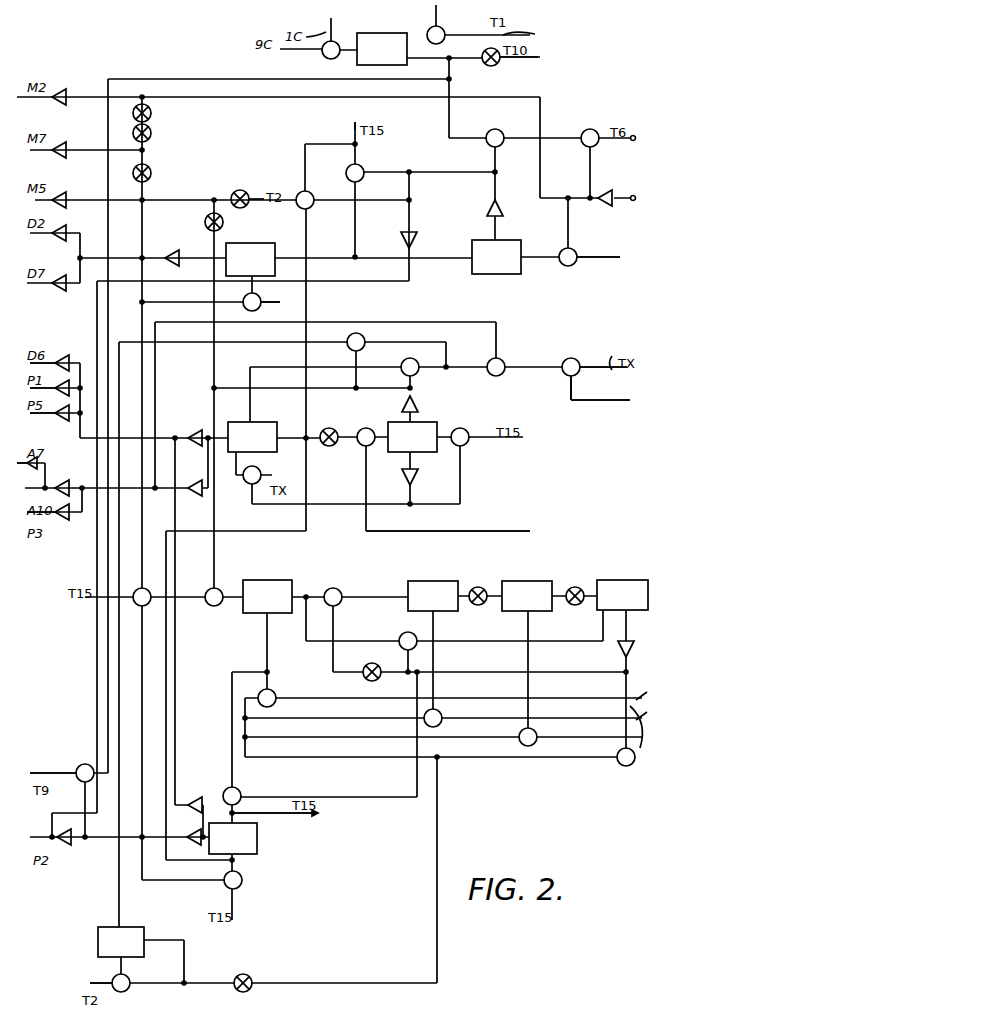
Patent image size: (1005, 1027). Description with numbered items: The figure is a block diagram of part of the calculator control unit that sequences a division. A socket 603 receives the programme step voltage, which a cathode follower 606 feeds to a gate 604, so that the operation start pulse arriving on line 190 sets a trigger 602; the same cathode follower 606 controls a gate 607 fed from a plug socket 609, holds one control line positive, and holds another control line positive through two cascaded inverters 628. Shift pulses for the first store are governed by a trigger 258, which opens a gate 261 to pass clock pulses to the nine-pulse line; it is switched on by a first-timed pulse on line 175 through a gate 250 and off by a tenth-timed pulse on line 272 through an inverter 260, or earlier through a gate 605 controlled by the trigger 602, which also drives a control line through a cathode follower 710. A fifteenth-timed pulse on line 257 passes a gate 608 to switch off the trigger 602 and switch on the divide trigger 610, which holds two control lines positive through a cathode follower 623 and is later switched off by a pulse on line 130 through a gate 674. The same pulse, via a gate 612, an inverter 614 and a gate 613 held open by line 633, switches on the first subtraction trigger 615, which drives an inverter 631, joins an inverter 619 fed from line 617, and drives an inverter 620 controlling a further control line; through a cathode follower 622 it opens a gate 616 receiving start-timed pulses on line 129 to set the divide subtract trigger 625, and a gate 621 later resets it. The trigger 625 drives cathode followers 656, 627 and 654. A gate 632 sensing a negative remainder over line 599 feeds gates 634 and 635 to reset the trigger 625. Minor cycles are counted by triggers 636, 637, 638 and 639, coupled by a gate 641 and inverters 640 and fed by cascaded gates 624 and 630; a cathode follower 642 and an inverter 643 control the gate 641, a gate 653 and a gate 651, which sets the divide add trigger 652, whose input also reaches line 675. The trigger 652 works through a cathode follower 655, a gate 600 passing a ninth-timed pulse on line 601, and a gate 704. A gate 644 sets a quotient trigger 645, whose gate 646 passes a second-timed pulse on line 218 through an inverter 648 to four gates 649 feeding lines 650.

The gate 261 is at (323, 57).
The trigger 258 is at (390, 66).
The gate 250 is at (444, 41).
The line 175 is at (534, 36).
The inverter 260 is at (498, 64).
The line 272 is at (534, 55).
The gate 605 is at (495, 130).
The gate 607 is at (597, 145).
The plug socket 609 is at (634, 135).
The cathode follower 606 is at (612, 209).
The socket 603 is at (636, 195).
The trigger 602 is at (492, 268).
The gate 604 is at (573, 265).
The line 190 is at (585, 257).
The gate 608 is at (359, 169).
The line 257 is at (354, 128).
The gate 612 is at (306, 198).
The cathode follower 710 is at (413, 241).
The cascaded inverters 628 is at (150, 120).
The inverter 620 is at (151, 169).
The inverter 619 is at (236, 192).
The line 617 is at (264, 197).
The inverter 631 is at (223, 222).
The cathode follower 623 is at (170, 253).
The divide trigger 610 is at (275, 257).
The gate 674 is at (250, 311).
The line 130 is at (293, 304).
The gate 644 is at (355, 333).
The gate 635 is at (404, 360).
The gate 634 is at (511, 355).
The gate 632 is at (572, 359).
The line 129 is at (262, 474).
The line 599 is at (611, 393).
The inverter 614 is at (329, 428).
The gate 613 is at (368, 428).
The first subtraction trigger 615 is at (426, 436).
The gate 621 is at (464, 429).
The cathode follower 622 is at (416, 479).
The line 633 is at (512, 531).
The divide subtract trigger 625 is at (195, 434).
The gate 616 is at (248, 484).
The cathode follower 656 is at (194, 484).
The cathode followers 627 is at (66, 411).
The cathode followers 654 is at (36, 460).
The gate 624 is at (145, 607).
The gate 630 is at (216, 607).
The first counting trigger 636 is at (265, 595).
The gate 641 is at (334, 589).
The second counting trigger 637 is at (430, 595).
The inverters 640 is at (478, 587).
The third counting trigger 638 is at (524, 595).
The fourth counting trigger 639 is at (622, 595).
The cathode follower 642 is at (617, 649).
The gate 653 is at (404, 636).
The inverter 643 is at (364, 678).
The gates 649 is at (275, 705).
The lines 650 is at (617, 720).
The gate 651 is at (240, 792).
The line 675 is at (317, 813).
The divide add trigger 652 is at (240, 840).
The gate 704 is at (242, 880).
The cathode follower 655 is at (192, 800).
The gate 600 is at (82, 766).
The line 601 is at (53, 770).
The quotient trigger 645 is at (103, 936).
The line 218 is at (104, 983).
The gate 646 is at (130, 981).
The inverter 648 is at (249, 978).